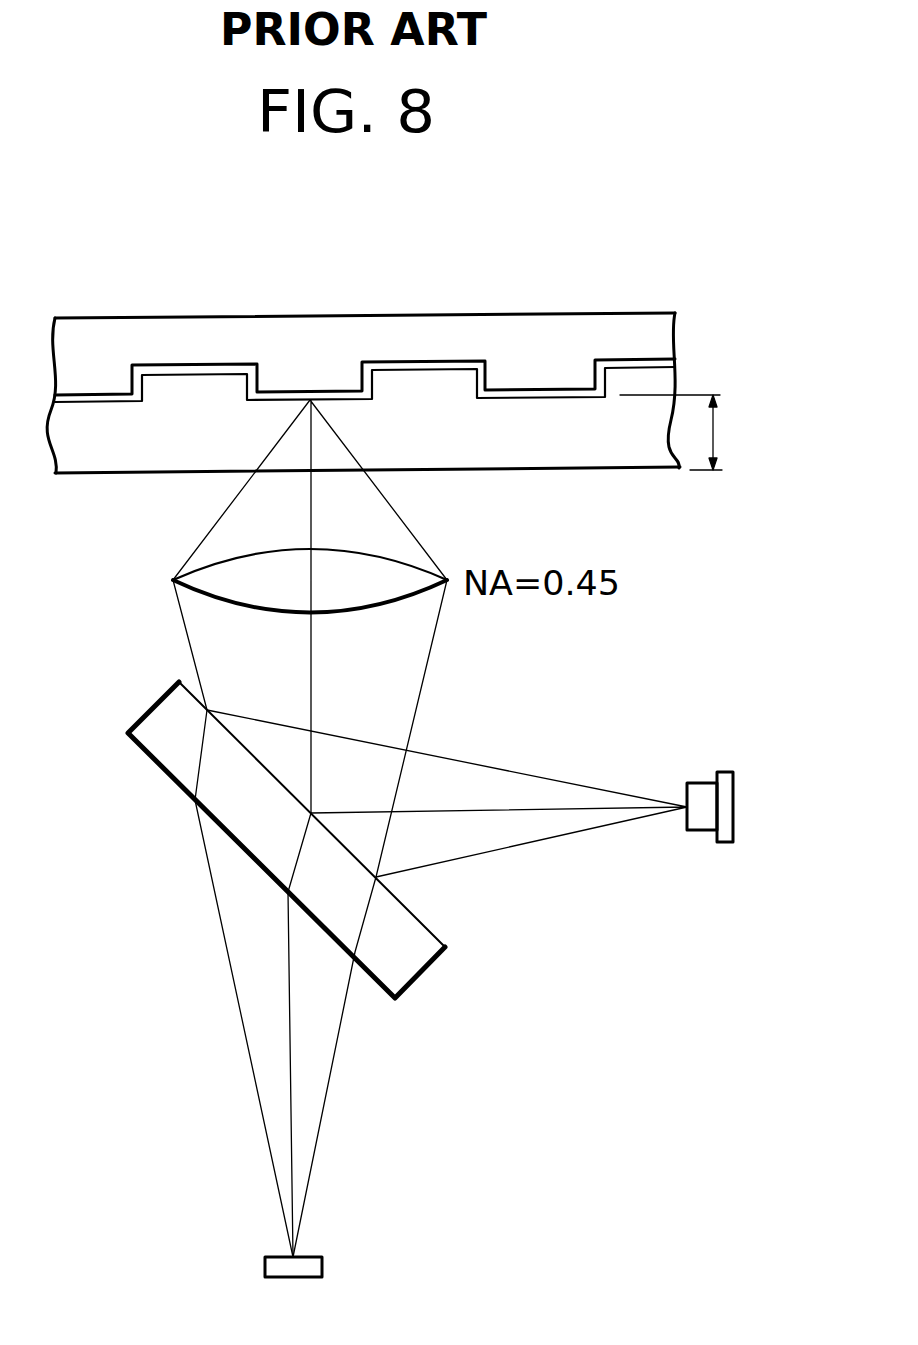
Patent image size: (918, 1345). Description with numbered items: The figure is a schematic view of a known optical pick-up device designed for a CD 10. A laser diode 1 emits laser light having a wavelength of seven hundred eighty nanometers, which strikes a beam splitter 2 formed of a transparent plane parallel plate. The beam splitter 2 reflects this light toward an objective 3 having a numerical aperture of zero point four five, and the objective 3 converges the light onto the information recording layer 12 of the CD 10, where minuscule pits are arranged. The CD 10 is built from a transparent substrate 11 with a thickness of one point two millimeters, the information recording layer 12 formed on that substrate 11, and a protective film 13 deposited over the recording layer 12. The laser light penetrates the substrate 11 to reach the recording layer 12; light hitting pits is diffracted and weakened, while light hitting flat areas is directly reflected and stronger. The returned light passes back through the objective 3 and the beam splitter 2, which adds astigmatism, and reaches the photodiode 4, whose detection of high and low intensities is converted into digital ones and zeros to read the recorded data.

The laser diode 1 is at (700, 830).
The beam splitter 2 is at (432, 968).
The objective 3 is at (407, 598).
The photodiode 4 is at (322, 1265).
The CD 10 is at (460, 384).
The transparent substrate 11 is at (650, 467).
The information recording layer 12 is at (667, 363).
The protective film 13 is at (628, 333).